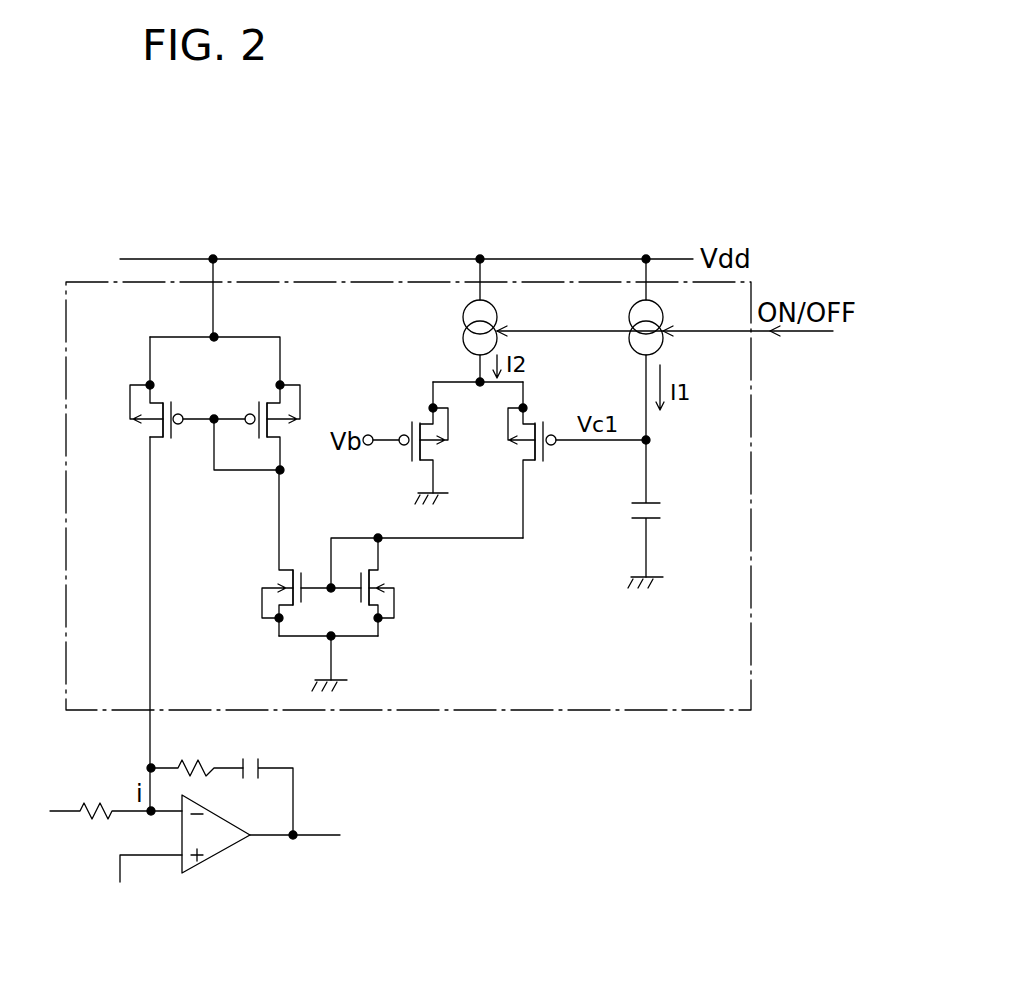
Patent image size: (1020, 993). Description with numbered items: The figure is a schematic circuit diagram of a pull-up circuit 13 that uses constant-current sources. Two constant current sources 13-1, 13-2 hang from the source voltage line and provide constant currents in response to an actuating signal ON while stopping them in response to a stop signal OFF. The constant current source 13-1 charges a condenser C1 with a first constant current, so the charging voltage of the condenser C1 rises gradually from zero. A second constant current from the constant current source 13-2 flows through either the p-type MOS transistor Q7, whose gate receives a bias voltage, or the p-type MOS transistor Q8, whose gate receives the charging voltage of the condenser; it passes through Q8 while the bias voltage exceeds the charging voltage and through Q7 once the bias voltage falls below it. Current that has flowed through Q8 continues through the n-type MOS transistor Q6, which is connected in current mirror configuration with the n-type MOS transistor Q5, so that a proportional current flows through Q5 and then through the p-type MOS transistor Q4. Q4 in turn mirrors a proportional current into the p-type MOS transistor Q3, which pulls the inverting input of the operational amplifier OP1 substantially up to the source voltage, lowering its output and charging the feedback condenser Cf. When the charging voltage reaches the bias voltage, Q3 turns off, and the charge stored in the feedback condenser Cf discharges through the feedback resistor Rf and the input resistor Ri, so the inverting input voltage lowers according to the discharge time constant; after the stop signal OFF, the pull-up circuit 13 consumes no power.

The pull-up circuit 13 is at (633, 712).
The constant current source 13-1 is at (630, 318).
The constant current source 13-2 is at (466, 318).
The p-type MOS transistor Q3 is at (172, 387).
The p-type MOS transistor Q4 is at (225, 403).
The n-type MOS transistor Q5 is at (274, 553).
The n-type MOS transistor Q6 is at (385, 587).
The p-type MOS transistor Q7 is at (405, 443).
The p-type MOS transistor Q8 is at (577, 460).
The condenser C1 is at (667, 514).
The input resistor Ri is at (100, 793).
The feedback resistor Rf is at (197, 752).
The feedback condenser Cf is at (264, 781).
The operational amplifier OP1 is at (222, 850).